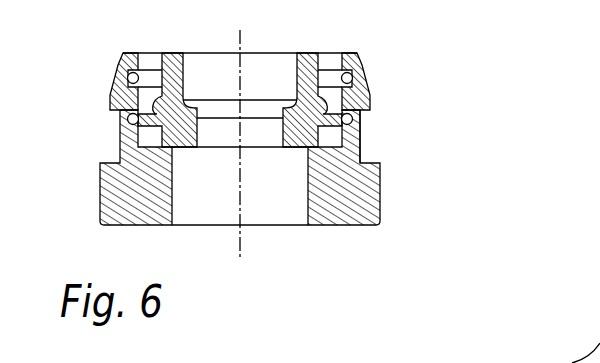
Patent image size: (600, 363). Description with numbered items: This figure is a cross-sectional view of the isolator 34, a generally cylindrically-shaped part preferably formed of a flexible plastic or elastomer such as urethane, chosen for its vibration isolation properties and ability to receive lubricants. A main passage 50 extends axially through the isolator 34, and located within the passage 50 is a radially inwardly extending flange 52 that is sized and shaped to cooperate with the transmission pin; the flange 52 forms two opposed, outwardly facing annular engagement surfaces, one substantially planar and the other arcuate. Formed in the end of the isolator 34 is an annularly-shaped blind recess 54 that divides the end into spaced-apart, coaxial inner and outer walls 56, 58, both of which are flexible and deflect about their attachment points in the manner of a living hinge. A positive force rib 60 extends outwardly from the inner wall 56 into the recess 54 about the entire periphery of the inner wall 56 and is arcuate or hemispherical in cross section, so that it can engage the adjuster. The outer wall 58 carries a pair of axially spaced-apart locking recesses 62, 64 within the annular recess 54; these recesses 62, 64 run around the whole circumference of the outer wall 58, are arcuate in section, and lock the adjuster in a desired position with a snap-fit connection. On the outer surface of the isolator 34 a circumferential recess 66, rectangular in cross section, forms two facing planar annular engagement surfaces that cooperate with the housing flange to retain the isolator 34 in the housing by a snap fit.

The isolator 34 is at (268, 141).
The main passage 50 is at (308, 193).
The flange 52 is at (197, 138).
The blind recess 54 is at (323, 53).
The inner wall 56 is at (284, 100).
The outer wall 58 is at (364, 64).
The positive force rib 60 is at (153, 104).
The locking recess 62 is at (125, 52).
The locking recess 64 is at (128, 114).
The recess 66 is at (365, 125).